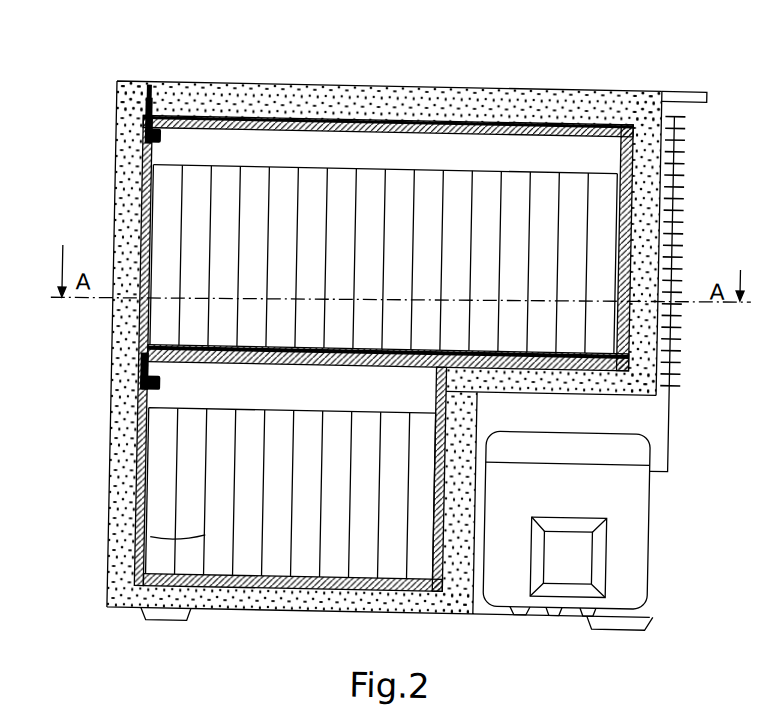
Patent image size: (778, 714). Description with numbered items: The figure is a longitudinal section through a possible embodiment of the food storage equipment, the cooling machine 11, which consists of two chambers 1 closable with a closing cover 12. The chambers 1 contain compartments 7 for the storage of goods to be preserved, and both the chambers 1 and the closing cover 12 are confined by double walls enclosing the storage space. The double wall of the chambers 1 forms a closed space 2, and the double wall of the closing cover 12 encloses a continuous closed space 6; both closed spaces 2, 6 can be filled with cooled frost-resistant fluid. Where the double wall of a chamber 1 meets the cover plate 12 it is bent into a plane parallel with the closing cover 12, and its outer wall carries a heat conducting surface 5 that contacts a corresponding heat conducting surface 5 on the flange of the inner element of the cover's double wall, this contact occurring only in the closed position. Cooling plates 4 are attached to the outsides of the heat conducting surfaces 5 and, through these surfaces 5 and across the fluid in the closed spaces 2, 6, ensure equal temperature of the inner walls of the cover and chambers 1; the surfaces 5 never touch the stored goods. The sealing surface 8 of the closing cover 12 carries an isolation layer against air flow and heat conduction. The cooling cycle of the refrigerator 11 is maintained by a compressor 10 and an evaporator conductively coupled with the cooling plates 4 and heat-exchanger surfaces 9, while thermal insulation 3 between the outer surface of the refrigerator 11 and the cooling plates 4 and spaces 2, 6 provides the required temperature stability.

The chamber 1 is at (591, 146).
The closed space 2 is at (432, 209).
The thermal insulation 3 is at (215, 93).
The cooling plate 4 is at (350, 240).
The heat conducting surface 5 is at (146, 138).
The continuous closed space 6 is at (138, 505).
The compartment 7 is at (264, 187).
The sealing surface 8 is at (149, 84).
The heat-exchanger surface 9 is at (682, 189).
The compressor 10 is at (640, 490).
The cooling machine 11 is at (505, 85).
The closing cover 12 is at (119, 178).